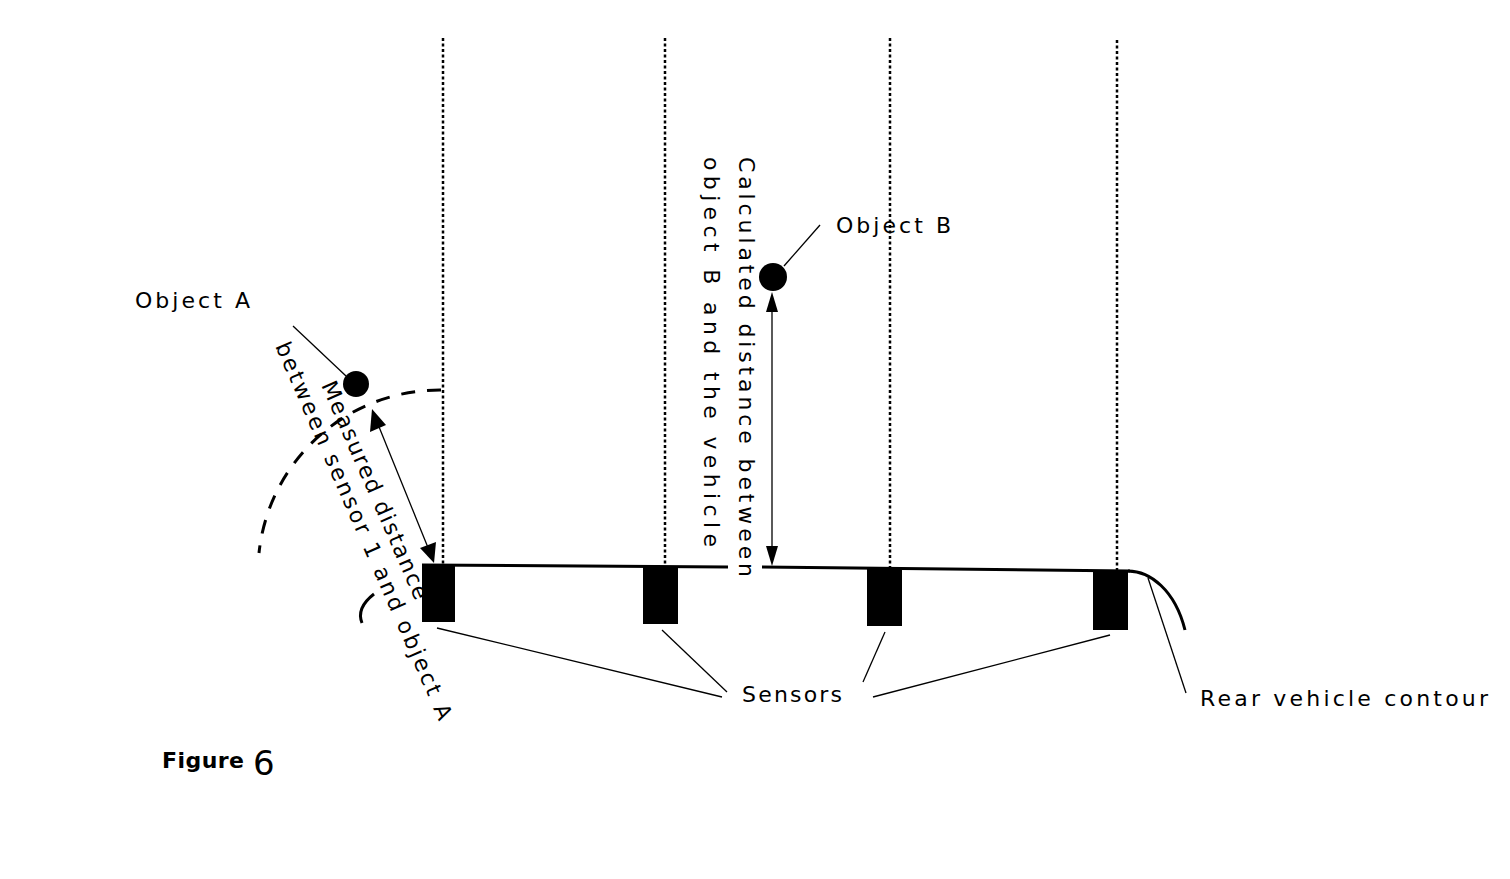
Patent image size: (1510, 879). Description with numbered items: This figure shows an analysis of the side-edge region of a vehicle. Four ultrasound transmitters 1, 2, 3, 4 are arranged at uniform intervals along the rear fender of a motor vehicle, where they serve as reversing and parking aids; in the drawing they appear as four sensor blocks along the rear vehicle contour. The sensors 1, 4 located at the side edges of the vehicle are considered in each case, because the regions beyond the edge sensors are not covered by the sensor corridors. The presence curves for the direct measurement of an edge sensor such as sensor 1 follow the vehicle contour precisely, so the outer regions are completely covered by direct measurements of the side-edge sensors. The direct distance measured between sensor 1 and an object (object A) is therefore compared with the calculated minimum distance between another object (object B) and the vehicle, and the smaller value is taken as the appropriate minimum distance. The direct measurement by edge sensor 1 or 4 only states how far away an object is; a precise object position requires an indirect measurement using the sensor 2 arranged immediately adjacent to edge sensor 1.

The ultrasound transmitter 1 is at (438, 593).
The ultrasound transmitter 2 is at (660, 595).
The ultrasound transmitter 3 is at (884, 597).
The ultrasound transmitter 4 is at (1110, 600).